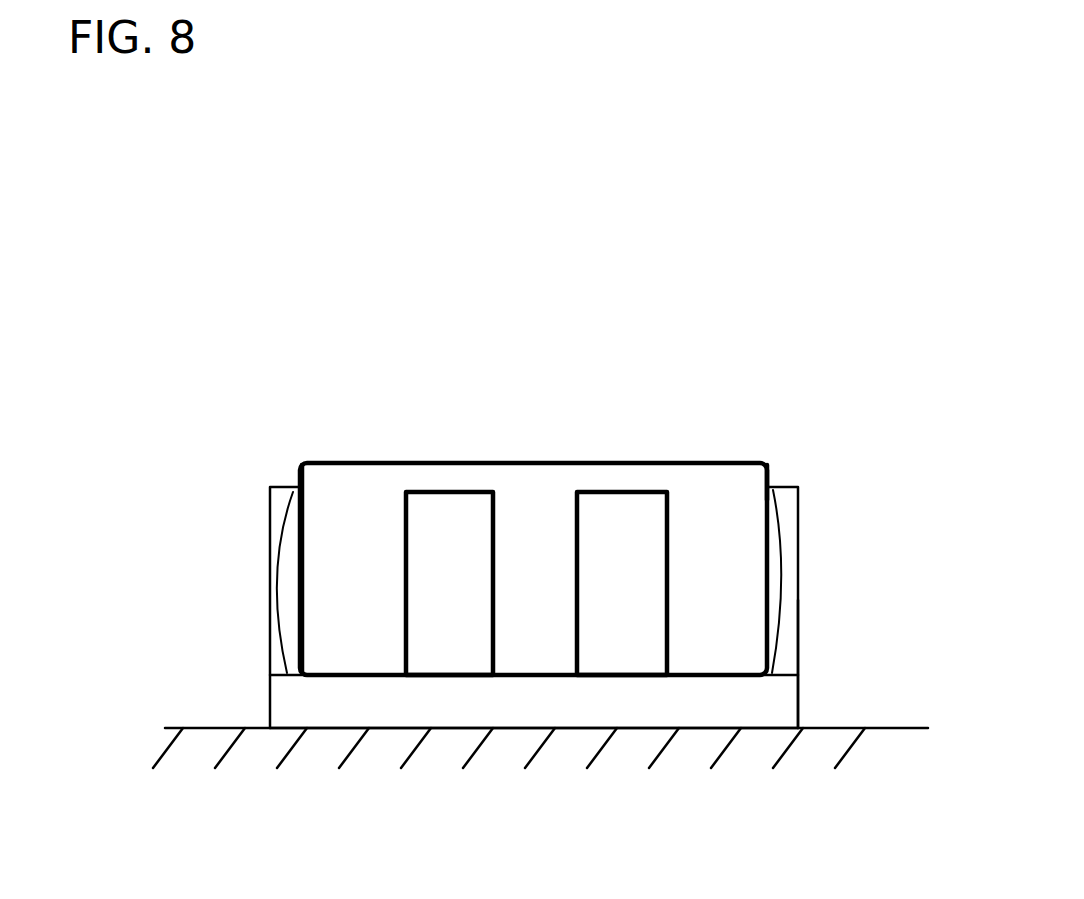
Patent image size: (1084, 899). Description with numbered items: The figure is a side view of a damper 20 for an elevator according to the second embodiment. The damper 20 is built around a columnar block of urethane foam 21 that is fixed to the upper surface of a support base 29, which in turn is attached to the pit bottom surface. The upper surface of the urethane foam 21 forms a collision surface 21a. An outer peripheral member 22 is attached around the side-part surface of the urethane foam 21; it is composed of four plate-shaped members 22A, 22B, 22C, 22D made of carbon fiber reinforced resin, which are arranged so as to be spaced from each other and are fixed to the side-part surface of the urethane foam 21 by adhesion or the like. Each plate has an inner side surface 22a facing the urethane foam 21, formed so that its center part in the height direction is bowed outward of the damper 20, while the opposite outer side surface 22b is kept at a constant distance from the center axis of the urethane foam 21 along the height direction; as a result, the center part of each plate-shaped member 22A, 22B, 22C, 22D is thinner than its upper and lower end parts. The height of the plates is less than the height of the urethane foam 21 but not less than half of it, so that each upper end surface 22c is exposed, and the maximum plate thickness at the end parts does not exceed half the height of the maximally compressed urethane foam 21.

The damper for elevator 20 is at (553, 219).
The urethane foam 21 is at (298, 485).
The collision surface 21a is at (312, 458).
The outer peripheral member 22 is at (855, 396).
The plate-shaped member 22A is at (317, 510).
The plate-shaped member 22B is at (432, 507).
The plate-shaped member 22C is at (618, 507).
The plate-shaped member 22D is at (782, 522).
The inner side surface 22a is at (750, 592).
The outer side surface 22b is at (797, 652).
The upper end surface 22c is at (781, 487).
The support base 29 is at (300, 698).